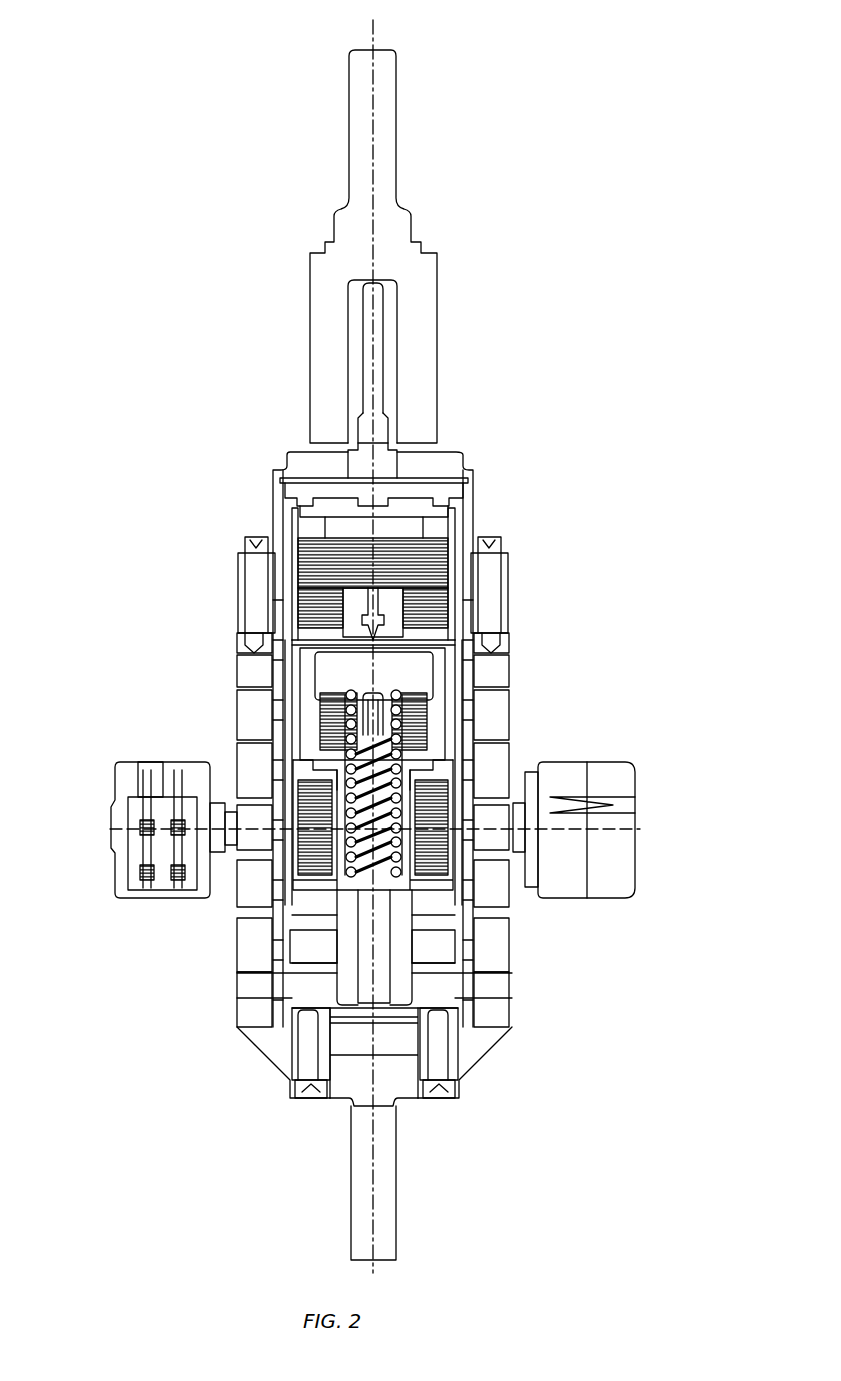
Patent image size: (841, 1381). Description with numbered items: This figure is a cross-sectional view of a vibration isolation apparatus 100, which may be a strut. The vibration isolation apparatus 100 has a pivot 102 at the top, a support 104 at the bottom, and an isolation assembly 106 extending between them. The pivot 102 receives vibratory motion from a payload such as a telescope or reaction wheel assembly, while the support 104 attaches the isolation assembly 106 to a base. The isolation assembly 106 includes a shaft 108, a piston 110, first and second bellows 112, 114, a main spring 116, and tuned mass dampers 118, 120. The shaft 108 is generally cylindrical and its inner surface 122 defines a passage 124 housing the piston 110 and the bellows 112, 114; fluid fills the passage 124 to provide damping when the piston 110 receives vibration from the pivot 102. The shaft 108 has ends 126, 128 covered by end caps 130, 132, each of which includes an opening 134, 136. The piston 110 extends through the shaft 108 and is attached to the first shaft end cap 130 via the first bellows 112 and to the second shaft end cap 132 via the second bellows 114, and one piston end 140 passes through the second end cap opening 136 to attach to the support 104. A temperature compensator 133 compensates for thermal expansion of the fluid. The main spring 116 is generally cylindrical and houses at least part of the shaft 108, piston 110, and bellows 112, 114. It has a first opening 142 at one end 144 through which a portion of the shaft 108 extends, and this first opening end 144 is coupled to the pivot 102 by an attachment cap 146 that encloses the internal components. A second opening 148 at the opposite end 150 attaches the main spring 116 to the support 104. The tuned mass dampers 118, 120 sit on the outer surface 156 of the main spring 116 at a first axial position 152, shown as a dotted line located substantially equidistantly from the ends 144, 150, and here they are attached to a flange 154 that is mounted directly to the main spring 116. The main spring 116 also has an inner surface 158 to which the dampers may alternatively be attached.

The vibration isolation apparatus 100 is at (668, 46).
The pivot 102 is at (438, 306).
The support 104 is at (351, 1188).
The isolation assembly 106 is at (124, 703).
The shaft 108 is at (291, 692).
The piston 110 is at (343, 634).
The first bellows 112 is at (302, 552).
The second bellows 114 is at (298, 877).
The main spring 116 is at (392, 432).
The tuned mass damper 118 is at (115, 853).
The tuned mass damper 120 is at (635, 855).
The inner surface 122 is at (291, 748).
The passage 124 is at (291, 665).
The shaft end 126 is at (291, 512).
The shaft end 128 is at (302, 882).
The first shaft end cap 130 is at (308, 523).
The second shaft end cap 132 is at (420, 880).
The temperature compensator 133 is at (430, 688).
The opening 134 is at (337, 523).
The opening 136 is at (430, 890).
The piston end 140 is at (445, 902).
The first opening 142 is at (472, 648).
The first opening end 144 is at (502, 632).
The attachment cap 146 is at (464, 474).
The second opening 148 is at (460, 1028).
The opposite end 150 is at (498, 1032).
The first axial position 152 is at (478, 830).
The flange 154 is at (225, 873).
The outer surface 156 is at (275, 712).
The inner surface 158 is at (277, 1021).